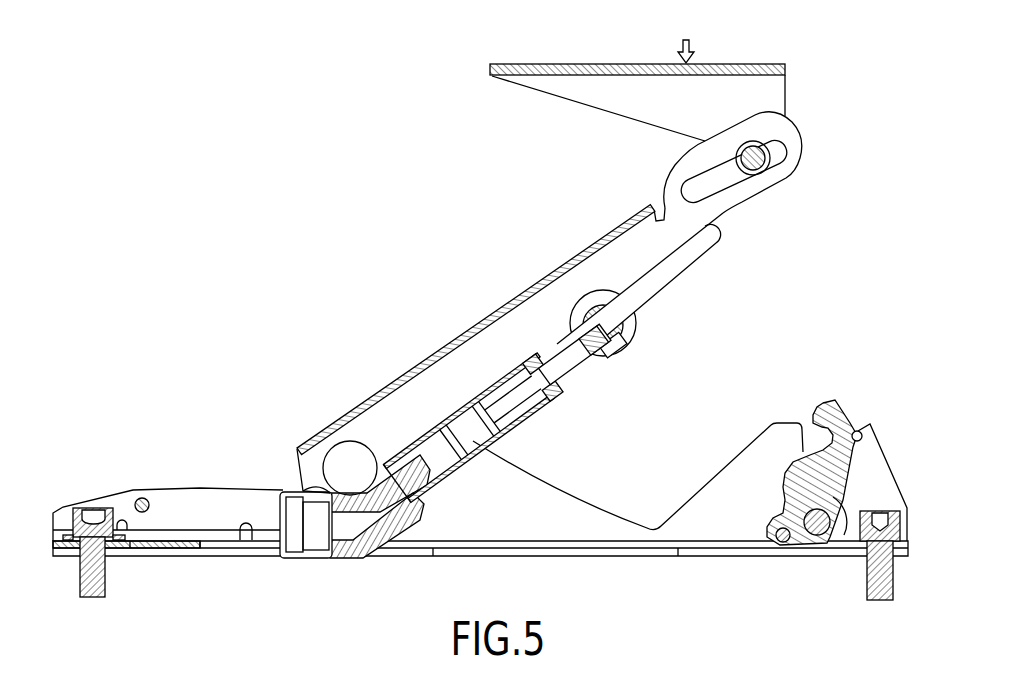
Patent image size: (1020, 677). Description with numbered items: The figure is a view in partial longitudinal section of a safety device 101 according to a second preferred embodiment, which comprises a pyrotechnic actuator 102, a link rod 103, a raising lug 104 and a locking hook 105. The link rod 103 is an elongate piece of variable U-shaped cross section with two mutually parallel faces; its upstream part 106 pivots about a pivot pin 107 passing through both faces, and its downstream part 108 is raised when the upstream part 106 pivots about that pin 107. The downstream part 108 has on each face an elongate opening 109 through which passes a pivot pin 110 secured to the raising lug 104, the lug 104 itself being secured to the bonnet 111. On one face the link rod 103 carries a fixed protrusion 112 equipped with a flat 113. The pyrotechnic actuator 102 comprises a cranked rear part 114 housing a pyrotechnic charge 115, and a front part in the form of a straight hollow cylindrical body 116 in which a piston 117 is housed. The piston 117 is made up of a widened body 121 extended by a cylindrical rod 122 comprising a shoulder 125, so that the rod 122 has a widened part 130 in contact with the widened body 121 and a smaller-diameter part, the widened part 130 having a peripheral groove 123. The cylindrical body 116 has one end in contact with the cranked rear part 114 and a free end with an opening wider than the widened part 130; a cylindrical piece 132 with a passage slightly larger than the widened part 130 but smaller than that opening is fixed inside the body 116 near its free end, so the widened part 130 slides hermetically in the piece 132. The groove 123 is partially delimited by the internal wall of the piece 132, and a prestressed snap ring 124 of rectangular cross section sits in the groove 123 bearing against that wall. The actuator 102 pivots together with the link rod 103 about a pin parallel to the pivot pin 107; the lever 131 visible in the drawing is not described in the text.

The safety device 101 is at (326, 275).
The pyrotechnic actuator 102 is at (390, 548).
The link rod 103 is at (530, 288).
The raising lug 104 is at (643, 102).
The locking hook 105 is at (840, 402).
The upstream part 106 is at (393, 433).
The pivot pin 107 is at (345, 440).
The downstream part 108 is at (765, 182).
The elongate opening 109 is at (705, 190).
The pivot pin 110 is at (768, 142).
The bonnet 111 is at (740, 62).
The fixed protrusion 112 is at (613, 347).
The flat 113 is at (548, 320).
The cranked rear part 114 is at (307, 563).
The pyrotechnic charge 115 is at (313, 523).
The straight hollow cylindrical body 116 is at (450, 417).
The piston 117 is at (507, 418).
The widened body 121 is at (467, 467).
The cylindrical rod 122 is at (615, 367).
The peripheral groove 123 is at (585, 352).
The prestressed snap ring 124 is at (550, 357).
The shoulder 125 is at (636, 320).
The widened part 130 is at (513, 400).
The link rod 131 is at (690, 262).
The cylindrical piece 132 is at (566, 385).